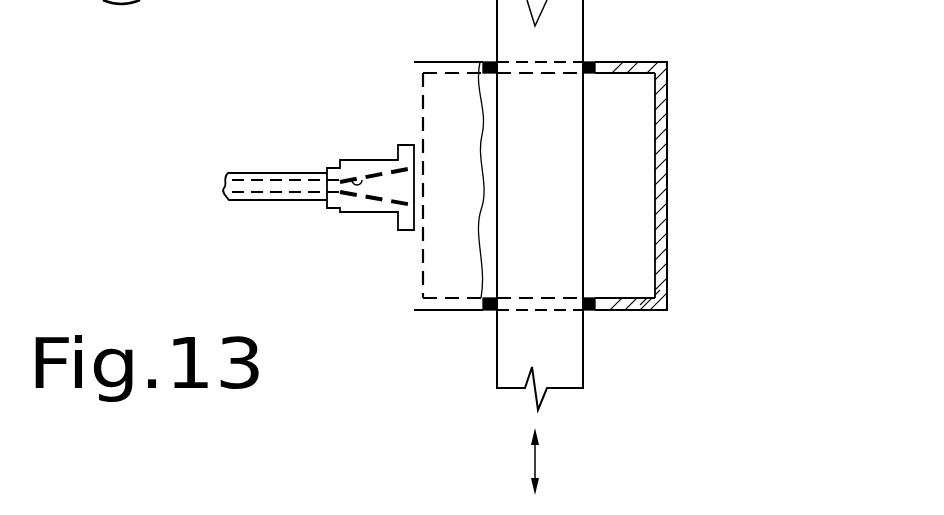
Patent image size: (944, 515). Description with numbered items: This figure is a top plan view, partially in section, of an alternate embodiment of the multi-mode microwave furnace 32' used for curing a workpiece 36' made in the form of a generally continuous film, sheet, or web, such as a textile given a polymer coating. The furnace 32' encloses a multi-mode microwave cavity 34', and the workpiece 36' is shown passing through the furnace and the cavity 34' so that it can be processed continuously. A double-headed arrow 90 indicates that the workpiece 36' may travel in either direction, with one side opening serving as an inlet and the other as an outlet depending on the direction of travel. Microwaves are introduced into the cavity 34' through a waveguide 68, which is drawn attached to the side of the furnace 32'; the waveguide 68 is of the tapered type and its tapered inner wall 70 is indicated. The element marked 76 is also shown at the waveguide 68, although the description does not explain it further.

The multi-mode microwave furnace 32' is at (599, 186).
The multi-mode microwave cavity 34' is at (611, 195).
The workpiece 36' is at (540, 205).
The waveguide 68 is at (342, 213).
The tapered inner wall 70 is at (367, 207).
The splice 76 is at (357, 178).
The double-headed arrow 90 is at (535, 460).